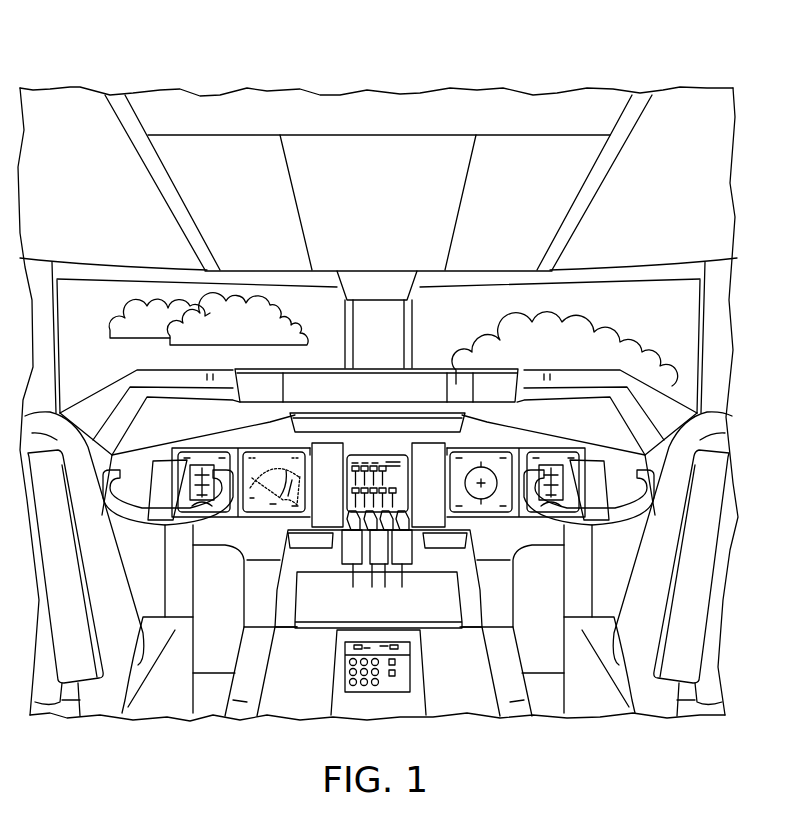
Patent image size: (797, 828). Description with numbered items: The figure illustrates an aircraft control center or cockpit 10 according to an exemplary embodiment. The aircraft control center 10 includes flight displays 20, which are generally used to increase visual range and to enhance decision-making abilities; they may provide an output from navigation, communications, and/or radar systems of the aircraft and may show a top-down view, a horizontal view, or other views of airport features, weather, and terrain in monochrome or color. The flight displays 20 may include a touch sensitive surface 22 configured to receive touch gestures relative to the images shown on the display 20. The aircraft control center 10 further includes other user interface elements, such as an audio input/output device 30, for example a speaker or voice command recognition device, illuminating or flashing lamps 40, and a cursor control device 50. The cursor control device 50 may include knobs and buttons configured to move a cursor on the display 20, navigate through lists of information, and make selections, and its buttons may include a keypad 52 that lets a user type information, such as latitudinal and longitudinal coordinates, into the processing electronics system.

The aircraft control center 10 is at (688, 73).
The flight displays 20 is at (200, 454).
The touch sensitive surface 22 is at (260, 456).
The audio input/output device 30 is at (447, 540).
The illuminating or flashing lamps 40 is at (461, 386).
The cursor control device 50 is at (403, 649).
The keypad 52 is at (360, 692).